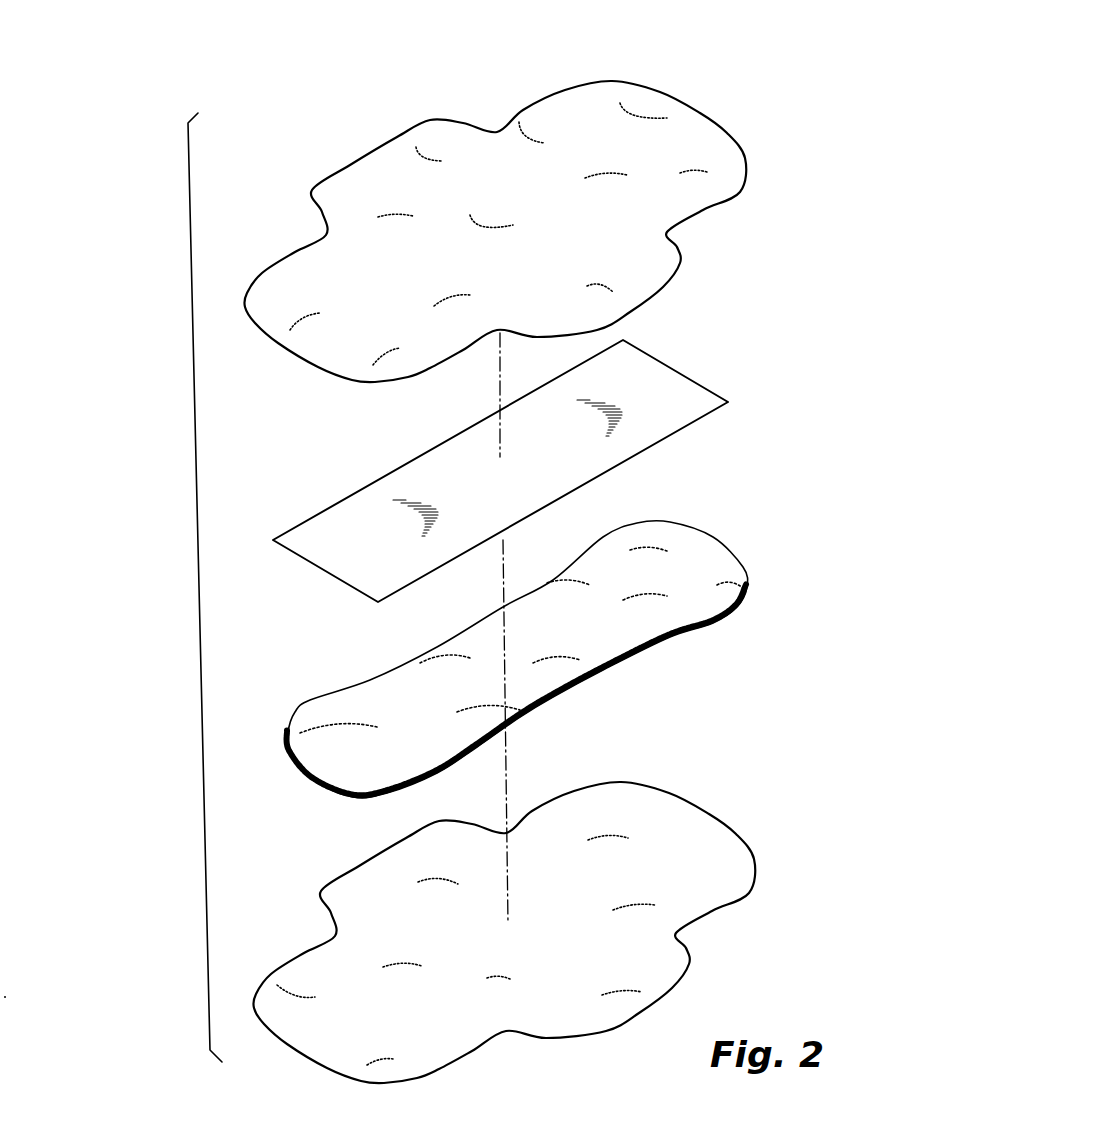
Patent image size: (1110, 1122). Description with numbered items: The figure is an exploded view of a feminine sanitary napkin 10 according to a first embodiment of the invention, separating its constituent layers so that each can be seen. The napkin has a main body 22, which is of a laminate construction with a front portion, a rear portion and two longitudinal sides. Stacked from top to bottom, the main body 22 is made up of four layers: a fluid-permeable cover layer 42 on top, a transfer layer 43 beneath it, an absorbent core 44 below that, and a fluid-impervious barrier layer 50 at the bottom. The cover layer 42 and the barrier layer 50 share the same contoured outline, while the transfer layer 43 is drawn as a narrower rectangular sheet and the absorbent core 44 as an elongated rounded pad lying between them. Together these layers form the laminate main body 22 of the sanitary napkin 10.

The sanitary napkin 10 is at (744, 78).
The main body 22 is at (130, 352).
The fluid-permeable cover layer 42 is at (718, 164).
The transfer layer 43 is at (697, 393).
The absorbent core 44 is at (730, 572).
The fluid-impervious barrier layer 50 is at (728, 843).